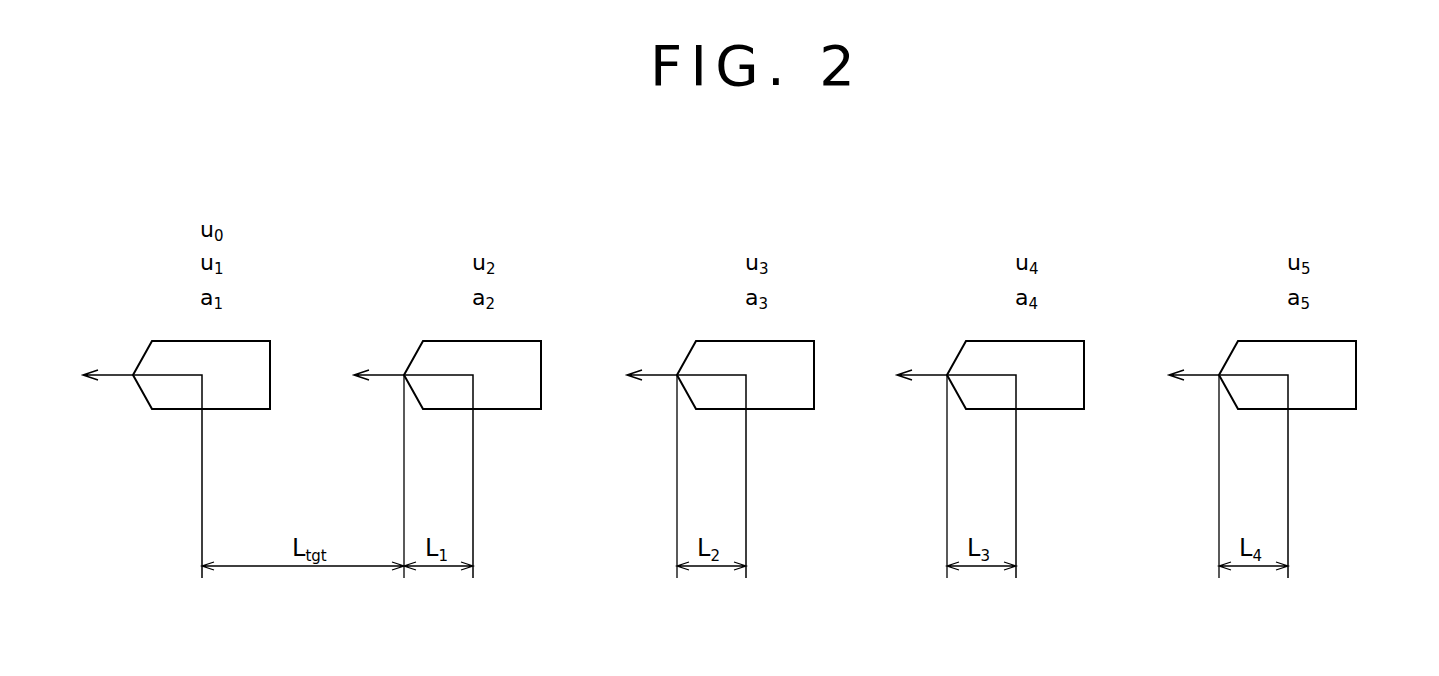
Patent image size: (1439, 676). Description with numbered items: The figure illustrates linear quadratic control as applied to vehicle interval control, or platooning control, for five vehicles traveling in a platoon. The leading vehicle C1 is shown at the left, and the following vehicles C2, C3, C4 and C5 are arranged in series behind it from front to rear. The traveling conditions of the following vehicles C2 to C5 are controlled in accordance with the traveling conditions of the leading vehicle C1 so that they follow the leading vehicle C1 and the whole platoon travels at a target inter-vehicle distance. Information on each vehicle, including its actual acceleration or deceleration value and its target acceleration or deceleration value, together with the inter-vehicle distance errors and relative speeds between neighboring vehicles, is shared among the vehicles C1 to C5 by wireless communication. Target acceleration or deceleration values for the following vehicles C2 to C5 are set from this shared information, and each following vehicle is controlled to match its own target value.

The leading vehicle C1 is at (270, 360).
The following vehicle C2 is at (541, 360).
The following vehicle C3 is at (814, 360).
The following vehicle C4 is at (1084, 360).
The following vehicle C5 is at (1356, 360).